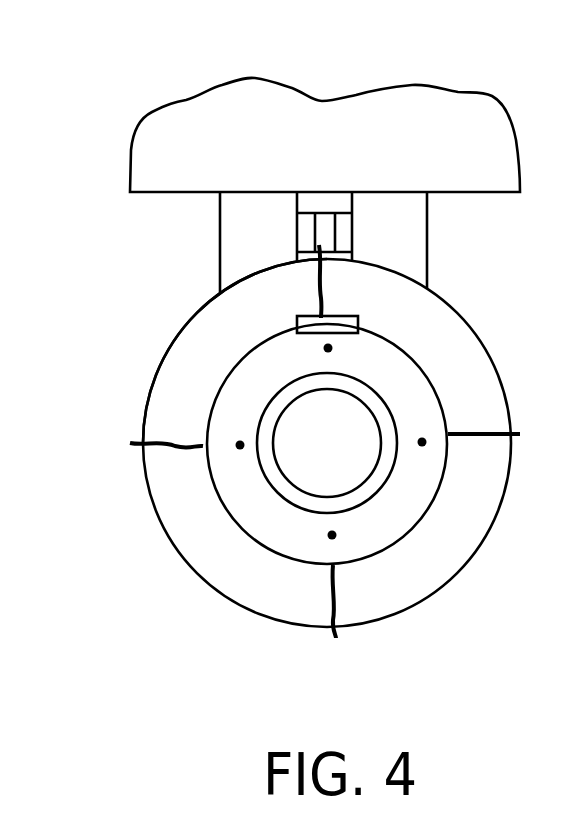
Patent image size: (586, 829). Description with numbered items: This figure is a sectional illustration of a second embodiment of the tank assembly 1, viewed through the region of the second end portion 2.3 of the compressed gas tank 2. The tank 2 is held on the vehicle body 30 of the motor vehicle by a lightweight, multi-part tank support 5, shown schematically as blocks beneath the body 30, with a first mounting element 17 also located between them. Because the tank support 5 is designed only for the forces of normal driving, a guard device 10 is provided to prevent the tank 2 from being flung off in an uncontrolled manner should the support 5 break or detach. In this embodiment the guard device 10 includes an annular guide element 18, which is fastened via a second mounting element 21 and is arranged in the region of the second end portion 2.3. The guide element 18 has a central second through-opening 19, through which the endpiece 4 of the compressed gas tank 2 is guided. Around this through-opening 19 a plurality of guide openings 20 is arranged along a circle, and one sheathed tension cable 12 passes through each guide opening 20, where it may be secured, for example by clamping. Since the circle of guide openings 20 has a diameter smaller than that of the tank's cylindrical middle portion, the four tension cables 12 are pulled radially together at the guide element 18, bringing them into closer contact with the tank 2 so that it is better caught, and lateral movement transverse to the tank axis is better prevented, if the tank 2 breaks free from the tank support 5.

The tank assembly 1 is at (472, 149).
The compressed gas tank 2 is at (432, 300).
The second end portion 2.3 is at (184, 322).
The endpiece 4 is at (336, 459).
The tank support 5 is at (256, 243).
The guard device 10 is at (491, 566).
The tension cables 12 is at (325, 282).
The first mounting element 17 is at (331, 233).
The guide element 18 is at (423, 370).
The second through-opening 19 is at (265, 421).
The guide openings 20 is at (315, 347).
The second mounting element 21 is at (350, 336).
The vehicle body 30 is at (346, 154).